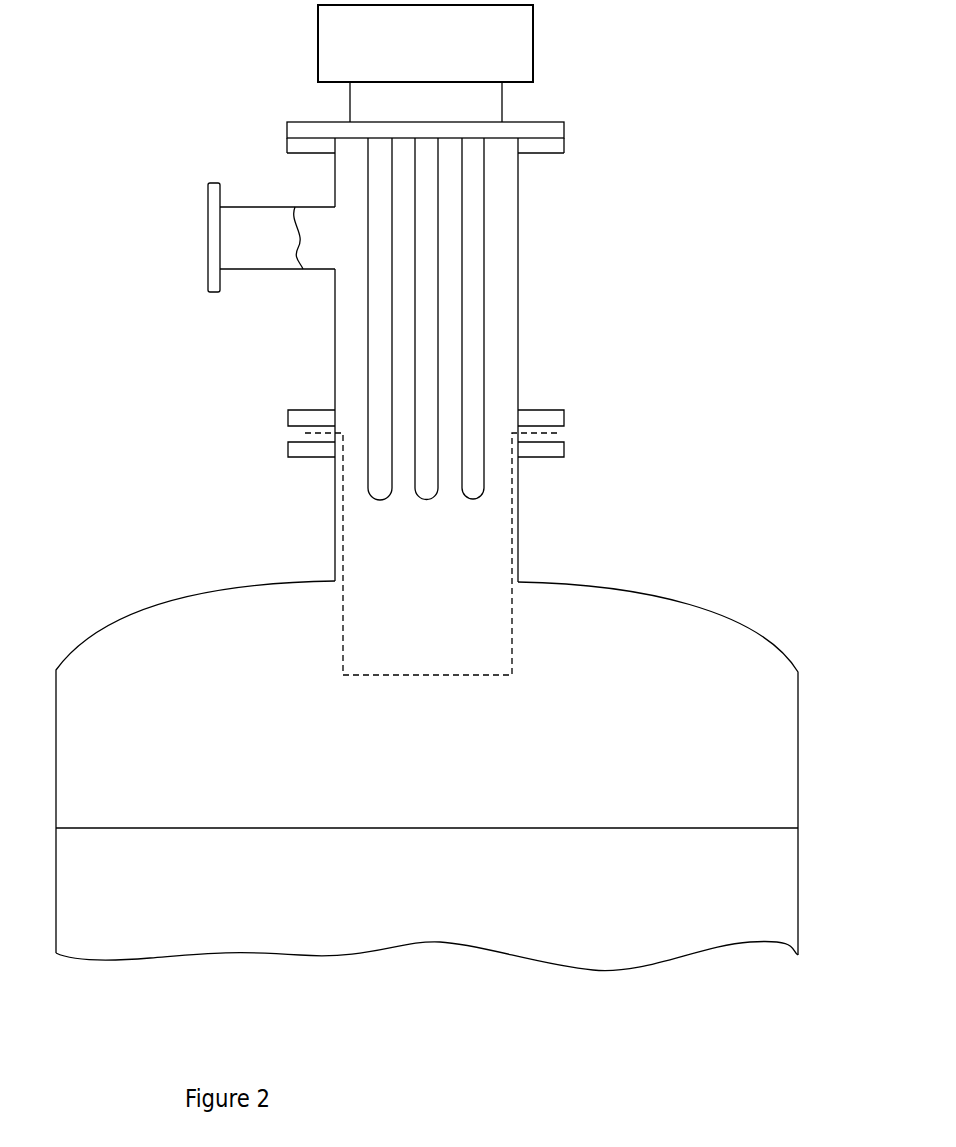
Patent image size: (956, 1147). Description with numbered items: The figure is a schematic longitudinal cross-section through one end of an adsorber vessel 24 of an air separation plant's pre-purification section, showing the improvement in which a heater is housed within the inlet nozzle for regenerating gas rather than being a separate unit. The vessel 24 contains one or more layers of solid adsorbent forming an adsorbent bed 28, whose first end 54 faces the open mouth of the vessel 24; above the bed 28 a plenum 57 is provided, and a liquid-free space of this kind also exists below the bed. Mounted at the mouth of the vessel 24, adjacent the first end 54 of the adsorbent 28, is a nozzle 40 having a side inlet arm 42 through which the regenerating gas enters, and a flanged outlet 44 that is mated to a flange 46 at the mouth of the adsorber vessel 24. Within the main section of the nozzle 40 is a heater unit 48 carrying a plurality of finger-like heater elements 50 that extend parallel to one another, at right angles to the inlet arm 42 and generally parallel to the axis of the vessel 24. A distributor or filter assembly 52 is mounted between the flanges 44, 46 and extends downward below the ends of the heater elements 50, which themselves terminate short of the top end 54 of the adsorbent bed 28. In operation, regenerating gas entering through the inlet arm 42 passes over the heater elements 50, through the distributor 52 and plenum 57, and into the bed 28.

The adsorber vessel 24 is at (807, 753).
The adsorbent bed 28 is at (569, 889).
The nozzle 40 is at (527, 347).
The inlet arm 42 is at (272, 262).
The flanged outlet 44 is at (543, 419).
The flange 46 is at (555, 450).
The heater unit 48 is at (498, 107).
The heater elements 50 is at (488, 290).
The distributor or filter assembly 52 is at (517, 530).
The first end 54 is at (235, 822).
The plenum 57 is at (641, 724).